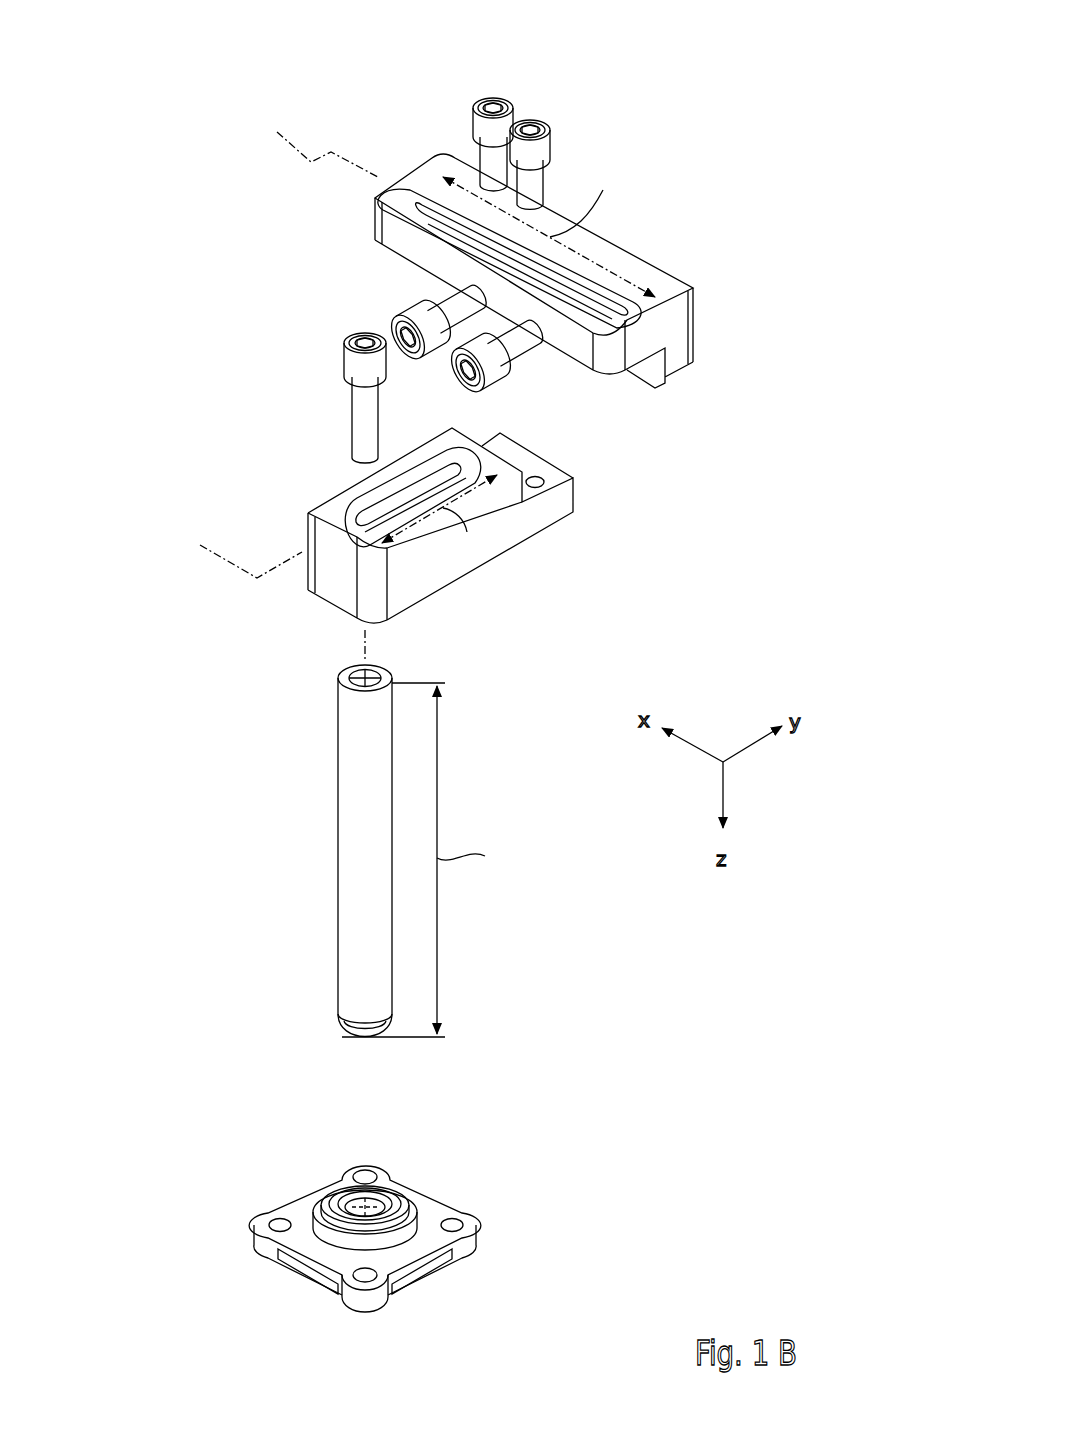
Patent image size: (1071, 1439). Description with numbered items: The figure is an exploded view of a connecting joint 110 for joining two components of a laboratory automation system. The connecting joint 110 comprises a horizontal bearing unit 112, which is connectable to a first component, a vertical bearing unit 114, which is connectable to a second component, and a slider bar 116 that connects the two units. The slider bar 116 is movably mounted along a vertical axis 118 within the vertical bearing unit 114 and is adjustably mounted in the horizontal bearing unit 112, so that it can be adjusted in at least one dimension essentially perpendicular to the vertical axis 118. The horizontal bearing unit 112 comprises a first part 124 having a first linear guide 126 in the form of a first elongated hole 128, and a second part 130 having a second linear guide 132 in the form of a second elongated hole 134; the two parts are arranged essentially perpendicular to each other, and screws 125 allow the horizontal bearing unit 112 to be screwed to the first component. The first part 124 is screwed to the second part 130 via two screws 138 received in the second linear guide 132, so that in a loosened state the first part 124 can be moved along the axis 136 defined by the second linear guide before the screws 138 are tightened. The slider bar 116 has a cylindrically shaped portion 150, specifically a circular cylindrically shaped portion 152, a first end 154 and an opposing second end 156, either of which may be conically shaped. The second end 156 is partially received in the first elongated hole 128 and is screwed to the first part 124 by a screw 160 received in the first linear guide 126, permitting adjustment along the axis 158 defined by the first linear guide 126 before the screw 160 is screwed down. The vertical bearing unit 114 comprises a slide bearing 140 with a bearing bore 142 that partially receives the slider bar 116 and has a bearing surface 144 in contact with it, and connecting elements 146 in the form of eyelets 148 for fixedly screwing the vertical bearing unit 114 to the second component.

The connecting joint 110 is at (738, 176).
The horizontal bearing unit 112 is at (222, 260).
The vertical bearing unit 114 is at (413, 1219).
The slider bar 116 is at (280, 843).
The vertical axis 118 is at (367, 641).
The first part 124 is at (320, 460).
The screws 125 is at (466, 386).
The first linear guide 126 is at (348, 496).
The first elongated hole 128 is at (363, 517).
The second part 130 is at (392, 140).
The second linear guide 132 is at (439, 257).
The second elongated hole 134 is at (407, 207).
The axis 136 is at (307, 144).
The screws 138 is at (537, 117).
The slide bearing 140 is at (530, 1236).
The bearing bore 142 is at (407, 1223).
The bearing surface 144 is at (362, 1198).
The connecting elements 146 is at (366, 1213).
The eyelets 148 is at (377, 1170).
The cylindrically shaped portion 150 is at (296, 851).
The circular cylindrically shaped portion 152 is at (354, 897).
The first end 154 is at (340, 1038).
The second end 156 is at (336, 672).
The axis 158 is at (233, 551).
The screw 160 is at (350, 341).